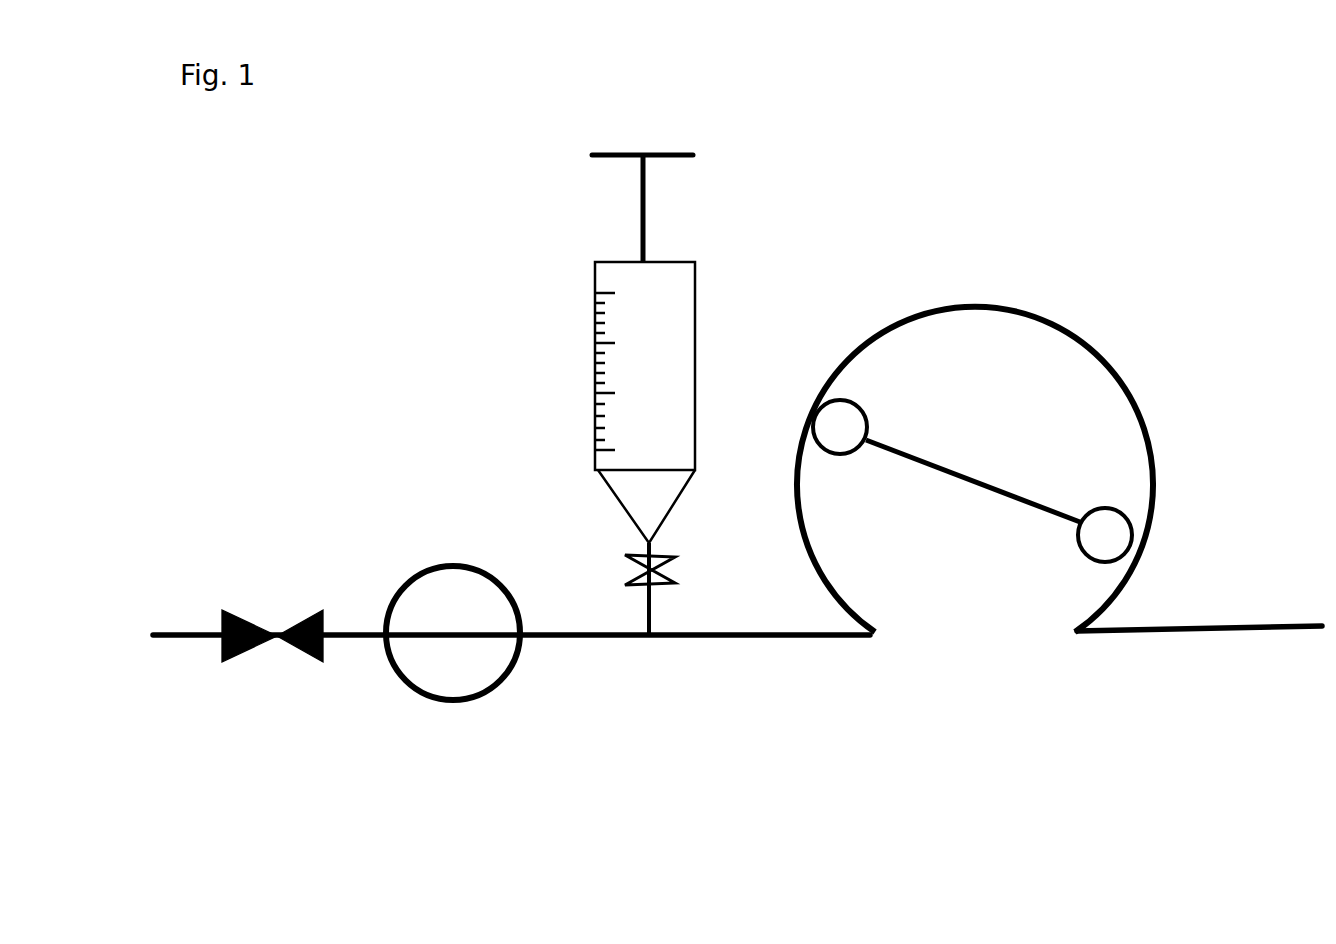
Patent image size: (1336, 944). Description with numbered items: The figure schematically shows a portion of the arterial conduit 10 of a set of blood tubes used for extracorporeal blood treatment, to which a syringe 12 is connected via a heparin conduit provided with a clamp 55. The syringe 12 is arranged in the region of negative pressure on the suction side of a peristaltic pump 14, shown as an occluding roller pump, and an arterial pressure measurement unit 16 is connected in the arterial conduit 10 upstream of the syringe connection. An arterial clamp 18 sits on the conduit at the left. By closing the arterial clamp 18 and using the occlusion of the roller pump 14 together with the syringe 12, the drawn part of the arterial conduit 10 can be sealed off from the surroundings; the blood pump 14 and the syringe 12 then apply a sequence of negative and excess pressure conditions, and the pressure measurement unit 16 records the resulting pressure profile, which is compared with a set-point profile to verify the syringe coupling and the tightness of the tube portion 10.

The arterial conduit 10 is at (728, 637).
The syringe 12 is at (667, 347).
The peristaltic pump 14 is at (1088, 430).
The arterial pressure measurement unit 16 is at (468, 603).
The arterial clamp 18 is at (295, 622).
The clamp 55 is at (682, 589).